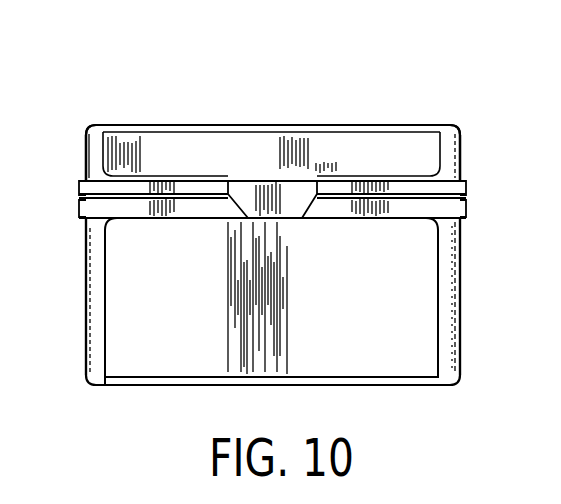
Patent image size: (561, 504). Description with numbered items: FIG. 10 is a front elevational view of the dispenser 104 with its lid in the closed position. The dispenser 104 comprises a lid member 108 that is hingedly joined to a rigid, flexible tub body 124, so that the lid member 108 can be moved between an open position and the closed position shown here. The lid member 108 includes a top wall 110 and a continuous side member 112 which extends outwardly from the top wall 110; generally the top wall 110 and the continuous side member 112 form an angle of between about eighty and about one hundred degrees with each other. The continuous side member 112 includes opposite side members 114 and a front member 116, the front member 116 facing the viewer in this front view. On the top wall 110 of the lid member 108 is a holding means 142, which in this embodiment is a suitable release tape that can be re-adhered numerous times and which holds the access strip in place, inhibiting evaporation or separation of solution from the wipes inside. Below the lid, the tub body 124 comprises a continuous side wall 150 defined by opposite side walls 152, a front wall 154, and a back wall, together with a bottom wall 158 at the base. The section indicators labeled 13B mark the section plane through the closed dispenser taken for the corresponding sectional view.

The dispenser 104 is at (393, 46).
The lid member 108 is at (469, 115).
The top wall 110 is at (244, 126).
The continuous side member 112 is at (85, 158).
The opposite side members 114 is at (463, 156).
The front member 116 is at (187, 150).
The section line 13B is at (390, 142).
The tub body 124 is at (470, 328).
The holding means 142 is at (463, 264).
The continuous side wall 150 is at (97, 352).
The opposite side walls 152 is at (85, 318).
The front wall 154 is at (211, 348).
The bottom wall 158 is at (405, 386).